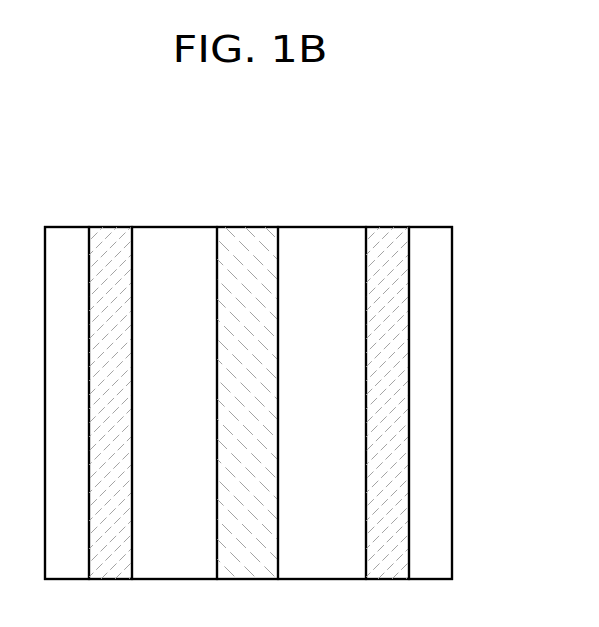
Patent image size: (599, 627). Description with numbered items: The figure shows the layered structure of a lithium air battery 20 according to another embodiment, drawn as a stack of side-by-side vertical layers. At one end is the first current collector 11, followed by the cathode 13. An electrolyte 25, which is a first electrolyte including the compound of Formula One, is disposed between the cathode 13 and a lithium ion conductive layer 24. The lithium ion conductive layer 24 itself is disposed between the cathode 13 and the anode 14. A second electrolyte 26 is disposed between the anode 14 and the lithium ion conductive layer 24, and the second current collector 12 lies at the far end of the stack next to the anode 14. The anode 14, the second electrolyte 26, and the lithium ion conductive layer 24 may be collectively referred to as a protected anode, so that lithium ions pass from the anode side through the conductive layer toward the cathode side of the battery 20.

The lithium air battery 20 is at (482, 210).
The first current collector 11 is at (69, 237).
The cathode 13 is at (113, 237).
The electrolyte 25 is at (175, 237).
The lithium ion conductive layer 24 is at (242, 237).
The second electrolyte 26 is at (322, 237).
The anode 14 is at (388, 237).
The second current collector 12 is at (431, 237).